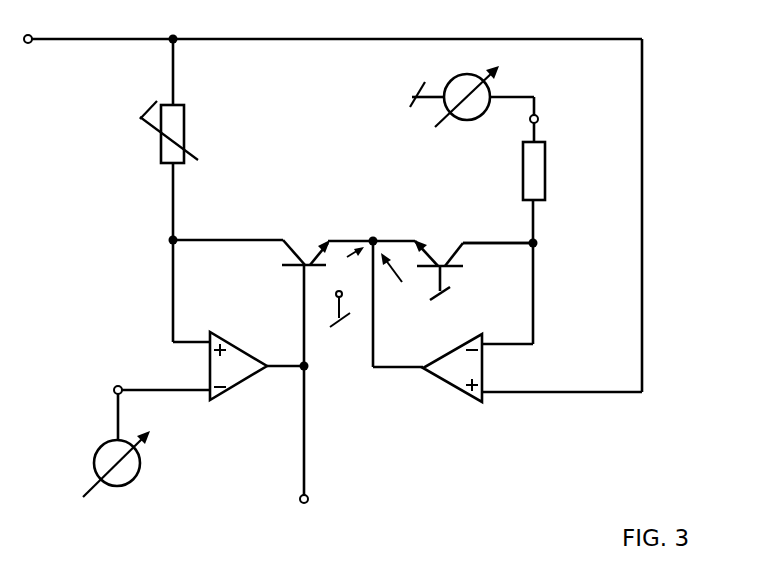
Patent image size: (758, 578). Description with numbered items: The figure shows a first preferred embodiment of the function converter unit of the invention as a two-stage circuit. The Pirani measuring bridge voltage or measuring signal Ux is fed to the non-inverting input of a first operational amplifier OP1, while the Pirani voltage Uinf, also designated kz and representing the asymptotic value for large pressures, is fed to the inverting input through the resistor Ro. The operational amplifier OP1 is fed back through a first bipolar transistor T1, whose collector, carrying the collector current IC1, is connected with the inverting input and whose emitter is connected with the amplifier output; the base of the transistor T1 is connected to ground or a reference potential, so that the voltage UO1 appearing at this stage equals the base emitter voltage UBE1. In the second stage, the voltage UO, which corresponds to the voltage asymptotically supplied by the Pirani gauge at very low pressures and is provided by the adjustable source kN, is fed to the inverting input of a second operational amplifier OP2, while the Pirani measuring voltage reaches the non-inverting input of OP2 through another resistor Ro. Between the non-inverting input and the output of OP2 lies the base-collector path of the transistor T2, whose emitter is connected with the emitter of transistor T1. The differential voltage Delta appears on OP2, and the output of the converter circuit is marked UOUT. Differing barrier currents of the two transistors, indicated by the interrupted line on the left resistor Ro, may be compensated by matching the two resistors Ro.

The Pirani measuring bridge voltage Ux is at (38, 23).
The resistor Ro is at (361, 150).
The transistor T2 is at (306, 236).
The first bipolar transistor T1 is at (438, 253).
The collector current IC1 is at (498, 222).
The second operational amplifier OP2 is at (248, 377).
The differential voltage Delta is at (175, 366).
The first operational amplifier OP1 is at (445, 378).
The voltage Uo UO is at (139, 389).
The adjustable source for Uo kN is at (111, 445).
The converter output UOUT is at (332, 505).
The voltage Uo1 UO1 is at (349, 287).
The base emitter voltage UBE1 is at (407, 289).
The Pirani voltage kz is at (491, 102).
The Pirani voltage U-infinity Uinf is at (514, 128).